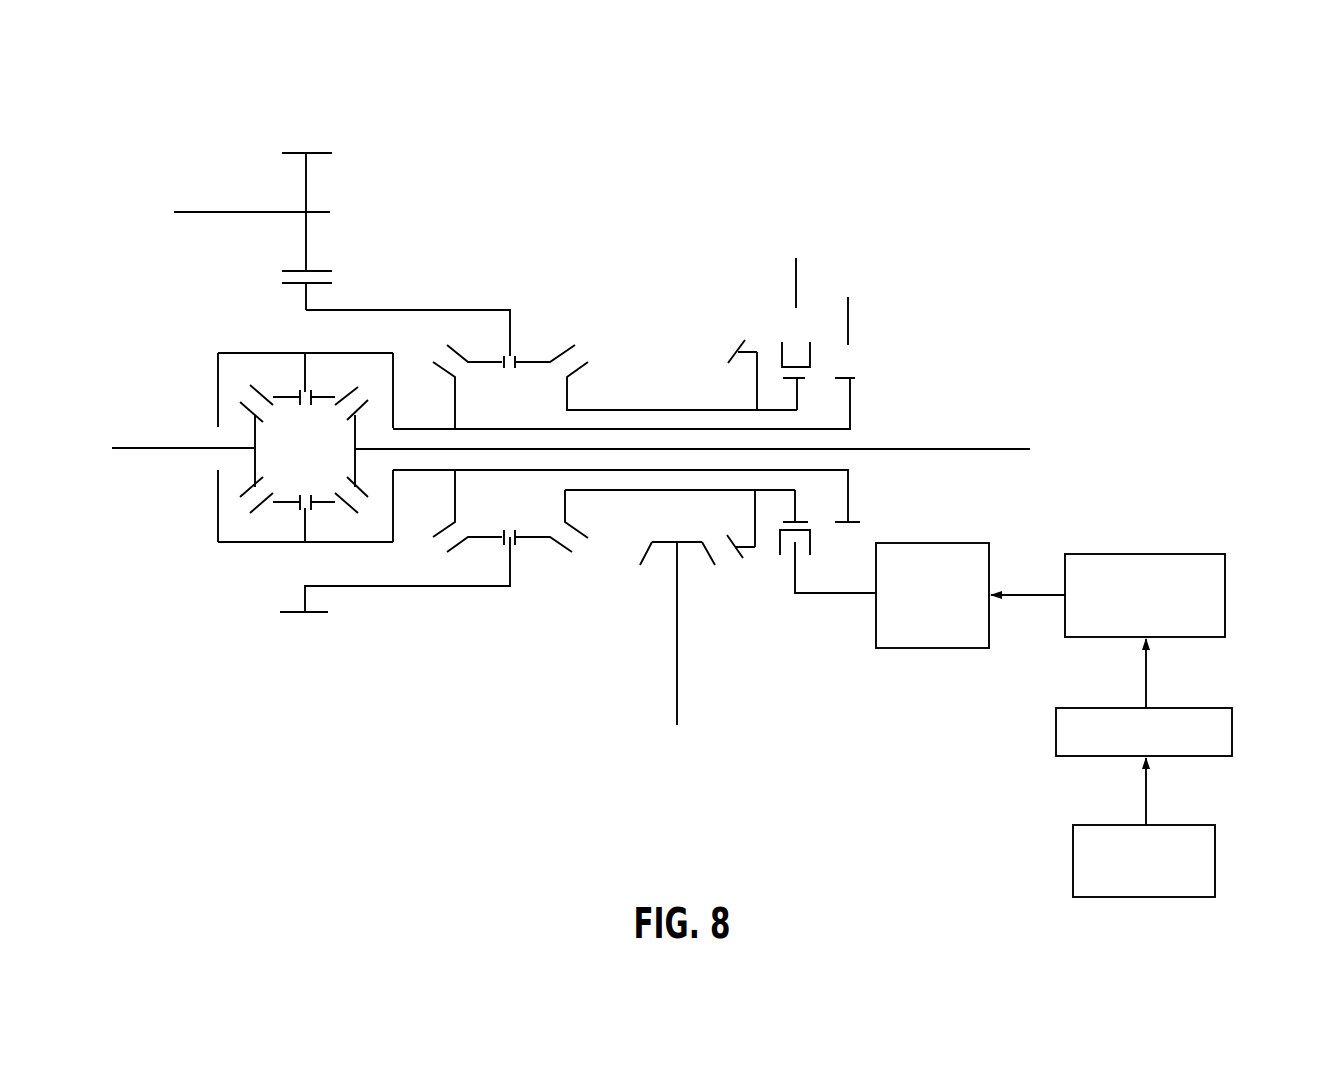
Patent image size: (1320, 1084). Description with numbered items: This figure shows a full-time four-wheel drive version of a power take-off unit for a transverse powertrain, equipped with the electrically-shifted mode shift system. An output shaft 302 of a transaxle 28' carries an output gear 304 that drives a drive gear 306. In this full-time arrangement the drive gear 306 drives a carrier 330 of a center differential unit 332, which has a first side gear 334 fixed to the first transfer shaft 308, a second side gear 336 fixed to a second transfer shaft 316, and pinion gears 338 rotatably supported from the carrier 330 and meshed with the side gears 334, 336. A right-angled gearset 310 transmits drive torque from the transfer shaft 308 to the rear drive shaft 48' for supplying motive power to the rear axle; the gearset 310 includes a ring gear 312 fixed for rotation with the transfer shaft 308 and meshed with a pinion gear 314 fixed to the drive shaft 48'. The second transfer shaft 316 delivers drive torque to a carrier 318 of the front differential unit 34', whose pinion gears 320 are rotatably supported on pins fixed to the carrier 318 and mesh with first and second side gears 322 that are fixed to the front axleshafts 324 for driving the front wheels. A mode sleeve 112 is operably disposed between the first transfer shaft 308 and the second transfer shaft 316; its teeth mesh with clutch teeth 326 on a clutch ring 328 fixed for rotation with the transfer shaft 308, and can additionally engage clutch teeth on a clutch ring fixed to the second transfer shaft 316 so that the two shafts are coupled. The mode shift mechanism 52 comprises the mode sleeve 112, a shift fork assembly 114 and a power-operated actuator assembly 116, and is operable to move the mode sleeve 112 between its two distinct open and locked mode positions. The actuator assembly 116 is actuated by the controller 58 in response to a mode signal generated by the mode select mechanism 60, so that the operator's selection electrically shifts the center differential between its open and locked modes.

The transaxle 28' is at (408, 236).
The output shaft 302 is at (216, 212).
The output gear 304 is at (323, 152).
The drive gear 306 is at (318, 613).
The transfer shaft 308 is at (697, 410).
The right-angled gearset 310 is at (738, 574).
The ring gear 312 is at (735, 350).
The pinion gear 314 is at (648, 552).
The second transfer shaft 316 is at (615, 470).
The carrier 318 is at (242, 352).
The pinion gears 320 is at (320, 395).
The side gears 322 is at (258, 434).
The front axleshafts 324 is at (140, 447).
The clutch teeth 326 is at (803, 380).
The clutch ring 328 is at (800, 505).
The carrier 330 is at (407, 310).
The center differential unit 332 is at (541, 327).
The first side gear 334 is at (567, 390).
The second side gear 336 is at (455, 495).
The pinion gears 338 is at (490, 362).
The front differential unit 34' is at (240, 511).
The rear drive shaft 48' is at (704, 667).
The mode sleeve 112 is at (781, 352).
The shift fork assembly 114 is at (928, 640).
The actuator assembly 116 is at (1205, 565).
The mode shift mechanism 52 is at (1084, 532).
The controller 58 is at (1220, 729).
The mode select mechanism 60 is at (1212, 860).